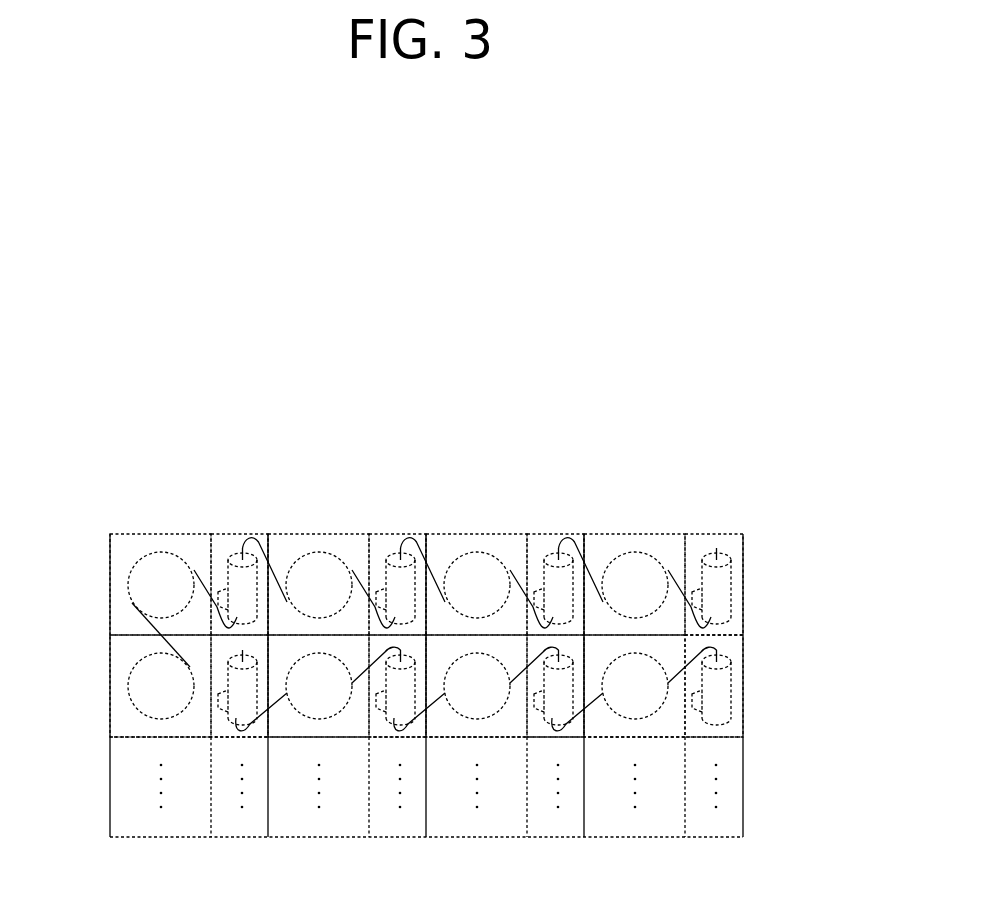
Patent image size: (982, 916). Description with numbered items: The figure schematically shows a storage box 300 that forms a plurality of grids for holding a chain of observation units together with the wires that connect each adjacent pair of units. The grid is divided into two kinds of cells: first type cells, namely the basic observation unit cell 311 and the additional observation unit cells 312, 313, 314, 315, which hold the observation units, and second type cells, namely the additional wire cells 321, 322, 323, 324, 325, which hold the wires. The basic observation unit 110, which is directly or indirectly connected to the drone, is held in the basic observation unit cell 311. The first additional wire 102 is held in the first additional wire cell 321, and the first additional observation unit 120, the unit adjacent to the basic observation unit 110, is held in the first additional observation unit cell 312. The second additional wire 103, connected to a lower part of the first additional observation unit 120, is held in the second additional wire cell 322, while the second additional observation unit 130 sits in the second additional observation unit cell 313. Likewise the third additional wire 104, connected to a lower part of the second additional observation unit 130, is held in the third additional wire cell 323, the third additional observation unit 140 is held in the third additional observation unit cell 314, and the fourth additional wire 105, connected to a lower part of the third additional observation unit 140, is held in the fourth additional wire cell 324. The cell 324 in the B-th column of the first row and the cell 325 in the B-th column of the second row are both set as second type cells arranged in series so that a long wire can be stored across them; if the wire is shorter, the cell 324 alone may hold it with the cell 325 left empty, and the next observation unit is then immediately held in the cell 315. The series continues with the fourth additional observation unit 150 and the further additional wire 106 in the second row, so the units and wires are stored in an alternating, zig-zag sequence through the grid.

The storage box 300 is at (812, 295).
The basic observation unit 110 is at (730, 582).
The 1-st additional wire 102 is at (682, 587).
The 2-nd additional wire 103 is at (524, 587).
The 3-rd additional wire 104 is at (366, 587).
The 4-th additional wire 105 is at (208, 587).
The additional wire 106 is at (242, 650).
The 1-st additional observation unit 120 is at (544, 548).
The 2-nd additional observation unit 130 is at (386, 548).
The 3-rd additional observation unit 140 is at (228, 548).
The 4-th additional observation unit 150 is at (220, 684).
The basic observation unit cell 311 is at (736, 545).
The 1-st additional observation unit cell 312 is at (578, 545).
The 2-nd additional observation unit cell 313 is at (420, 545).
The 3-rd additional observation unit cell 314 is at (262, 545).
The additional observation unit cell 315 is at (218, 716).
The 1-st additional wire cell 321 is at (616, 545).
The 2-nd additional wire cell 322 is at (458, 545).
The 3-rd additional wire cell 323 is at (300, 545).
The 4-th additional wire cell 324 is at (142, 545).
The additional wire cell 325 is at (123, 665).